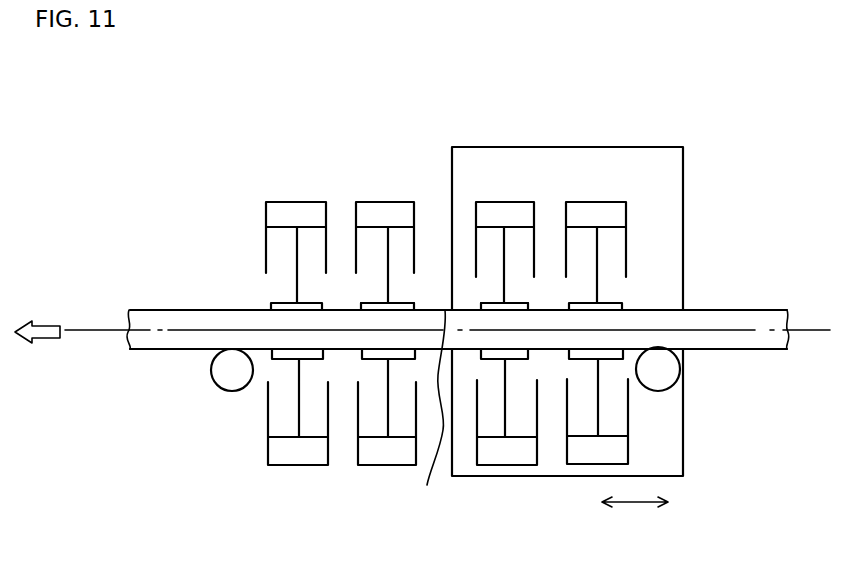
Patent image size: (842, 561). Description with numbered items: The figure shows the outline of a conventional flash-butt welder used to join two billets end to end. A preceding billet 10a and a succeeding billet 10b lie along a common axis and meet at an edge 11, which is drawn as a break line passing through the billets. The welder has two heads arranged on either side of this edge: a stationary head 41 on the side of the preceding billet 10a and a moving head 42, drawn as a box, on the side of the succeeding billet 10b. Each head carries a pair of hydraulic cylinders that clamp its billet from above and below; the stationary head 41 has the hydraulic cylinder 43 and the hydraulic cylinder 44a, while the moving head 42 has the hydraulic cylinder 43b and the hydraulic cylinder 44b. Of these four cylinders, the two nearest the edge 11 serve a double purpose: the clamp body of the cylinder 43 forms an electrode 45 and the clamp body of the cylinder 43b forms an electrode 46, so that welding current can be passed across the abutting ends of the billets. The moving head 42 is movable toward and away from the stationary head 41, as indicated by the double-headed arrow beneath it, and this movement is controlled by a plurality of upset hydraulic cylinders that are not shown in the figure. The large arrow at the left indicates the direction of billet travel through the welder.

The preceding billet 10a is at (157, 310).
The succeeding billet 10b is at (758, 308).
The edge of the billets 11 is at (428, 415).
The stationary head 41 is at (260, 178).
The moving head 42 is at (682, 183).
The hydraulic cylinder 43 is at (392, 210).
The hydraulic cylinder 43b is at (503, 208).
The hydraulic cylinder 44a is at (298, 210).
The hydraulic cylinder 44b is at (597, 210).
The electrode 45 is at (373, 303).
The electrode 46 is at (520, 302).